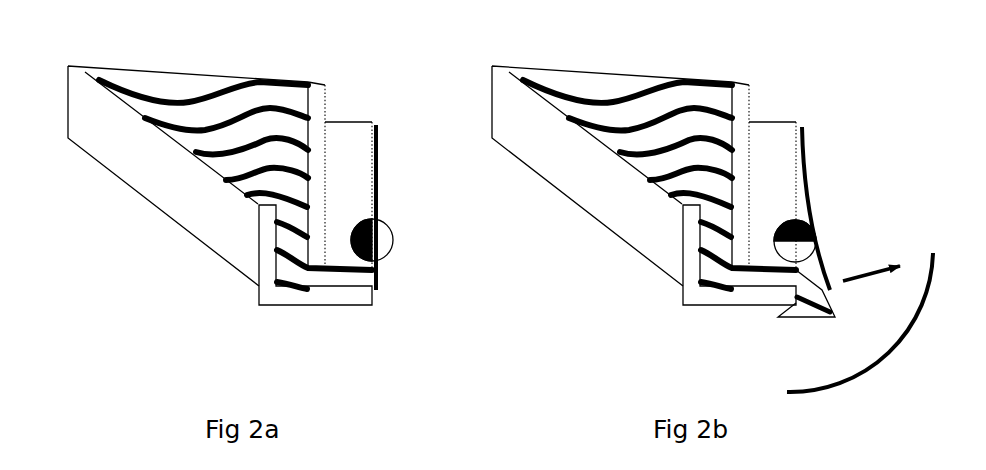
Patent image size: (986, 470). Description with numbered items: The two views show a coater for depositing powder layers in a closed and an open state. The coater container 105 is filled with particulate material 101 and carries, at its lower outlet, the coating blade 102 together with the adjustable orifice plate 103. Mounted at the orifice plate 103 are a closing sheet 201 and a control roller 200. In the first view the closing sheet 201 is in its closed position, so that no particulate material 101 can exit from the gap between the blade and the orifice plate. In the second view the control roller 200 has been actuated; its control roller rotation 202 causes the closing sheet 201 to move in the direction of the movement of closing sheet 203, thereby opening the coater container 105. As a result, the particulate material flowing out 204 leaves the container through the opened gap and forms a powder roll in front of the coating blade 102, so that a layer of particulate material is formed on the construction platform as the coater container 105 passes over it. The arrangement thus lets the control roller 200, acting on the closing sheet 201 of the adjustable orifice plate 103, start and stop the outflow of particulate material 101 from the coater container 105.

In FIG. 2A, the particulate material 101 is at (237, 90).
In FIG. 2B, the particulate material 101 is at (659, 184).
In FIG. 2A, the coating blade 102 is at (317, 295).
In FIG. 2B, the coating blade 102 is at (739, 255).
In FIG. 2A, the adjustable orifice plate 103 is at (348, 125).
In FIG. 2B, the adjustable orifice plate 103 is at (772, 195).
In FIG. 2A, the coater container 105 is at (177, 197).
In FIG. 2A, the control roller 200 is at (388, 247).
In FIG. 2B, the control roller 200 is at (795, 241).
In FIG. 2A, the closing sheet 201 is at (382, 275).
In FIG. 2B, the closing sheet 201 is at (818, 205).
In FIG. 2B, the control roller rotation 202 is at (860, 323).
In FIG. 2B, the movement of closing sheet 203 is at (871, 258).
In FIG. 2B, the particulate material flowing out 204 is at (808, 315).